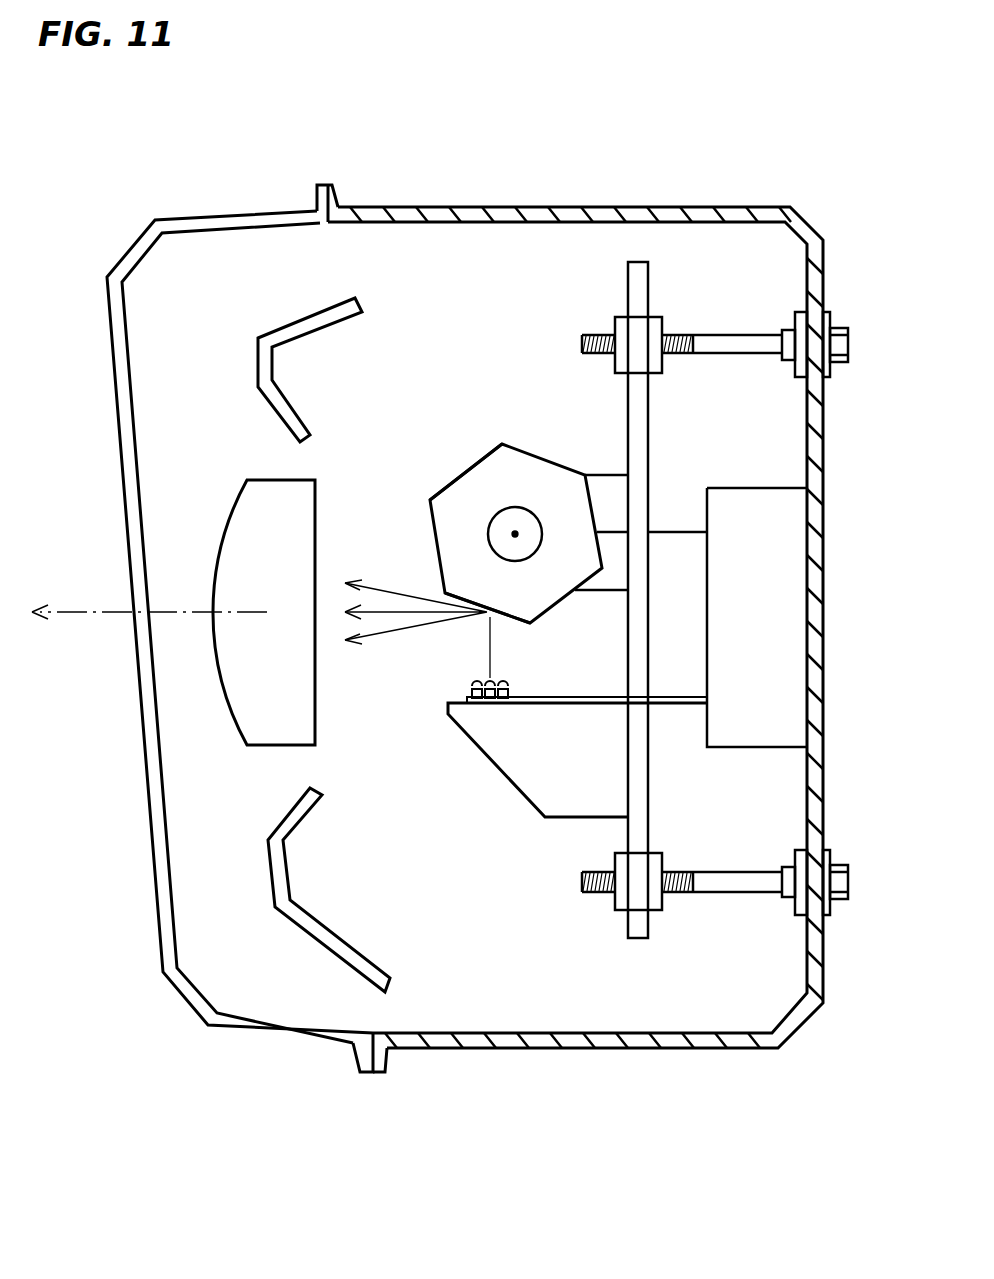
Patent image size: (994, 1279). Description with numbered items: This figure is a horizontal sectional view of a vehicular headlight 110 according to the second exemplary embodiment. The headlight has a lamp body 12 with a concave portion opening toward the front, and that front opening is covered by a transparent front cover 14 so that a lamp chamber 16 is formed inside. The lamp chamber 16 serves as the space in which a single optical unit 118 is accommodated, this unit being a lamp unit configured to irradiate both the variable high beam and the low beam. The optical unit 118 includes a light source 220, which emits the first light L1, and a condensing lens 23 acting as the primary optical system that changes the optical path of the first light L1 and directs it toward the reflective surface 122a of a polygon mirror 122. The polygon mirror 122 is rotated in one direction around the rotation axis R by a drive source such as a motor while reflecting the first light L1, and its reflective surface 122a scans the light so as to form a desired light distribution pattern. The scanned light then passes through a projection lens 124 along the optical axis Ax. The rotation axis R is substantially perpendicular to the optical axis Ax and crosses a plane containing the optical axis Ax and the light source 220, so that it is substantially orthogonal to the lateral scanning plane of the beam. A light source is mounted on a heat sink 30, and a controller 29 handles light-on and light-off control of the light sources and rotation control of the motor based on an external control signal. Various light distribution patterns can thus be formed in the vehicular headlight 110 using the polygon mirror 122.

The lamp body 12 is at (687, 1052).
The front cover 14 is at (273, 1037).
The lamp chamber 16 is at (433, 447).
The condensing lens 23 is at (497, 677).
The controller 29 is at (767, 488).
The heat sink 30 is at (510, 785).
The vehicular headlight 110 is at (486, 1208).
The optical unit 118 is at (380, 524).
The polygon mirror 122 is at (483, 443).
The reflective surface 122a is at (462, 474).
The projection lens 124 is at (263, 472).
The light source 220 is at (518, 690).
The optical axis Ax is at (98, 614).
The first light L1 is at (393, 633).
The rotation axis R is at (515, 534).